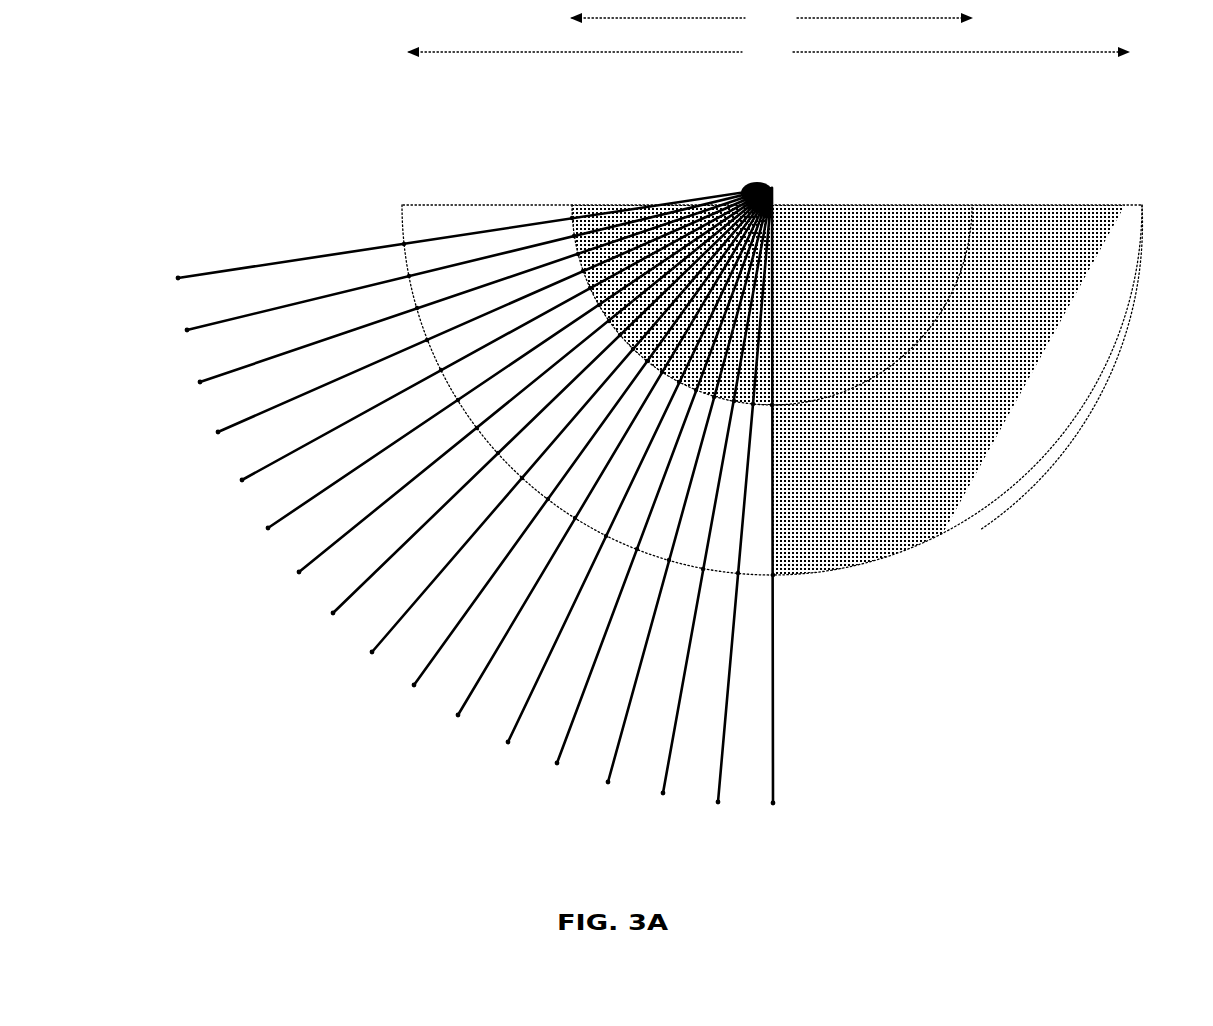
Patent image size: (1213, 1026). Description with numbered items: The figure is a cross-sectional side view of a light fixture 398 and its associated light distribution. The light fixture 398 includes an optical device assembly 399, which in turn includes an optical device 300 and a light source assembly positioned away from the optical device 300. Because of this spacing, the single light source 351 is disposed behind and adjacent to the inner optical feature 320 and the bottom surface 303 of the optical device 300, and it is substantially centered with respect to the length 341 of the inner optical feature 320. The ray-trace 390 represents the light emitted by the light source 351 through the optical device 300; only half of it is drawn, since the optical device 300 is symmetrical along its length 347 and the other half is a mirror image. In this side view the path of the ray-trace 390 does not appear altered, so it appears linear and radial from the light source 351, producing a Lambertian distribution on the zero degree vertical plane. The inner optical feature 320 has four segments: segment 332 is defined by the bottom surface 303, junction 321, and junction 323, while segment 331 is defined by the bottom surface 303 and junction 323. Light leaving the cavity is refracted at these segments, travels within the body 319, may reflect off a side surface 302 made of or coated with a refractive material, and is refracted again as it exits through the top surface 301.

The optical device 300 is at (952, 577).
The top surface 301 is at (978, 507).
The side surfaces 302 is at (997, 448).
The bottom surface 303 is at (495, 207).
The body 319 is at (875, 505).
The inner optical feature 320 is at (852, 196).
The junction 321 is at (892, 367).
The junction 323 is at (912, 268).
The segment 331 is at (887, 227).
The segment 332 is at (907, 318).
The length 341 is at (771, 17).
The length 347 is at (768, 51).
The light source 351 is at (775, 183).
The ray-trace 390 is at (353, 699).
The light fixture 398 is at (235, 133).
The optical device assembly 399 is at (1067, 133).